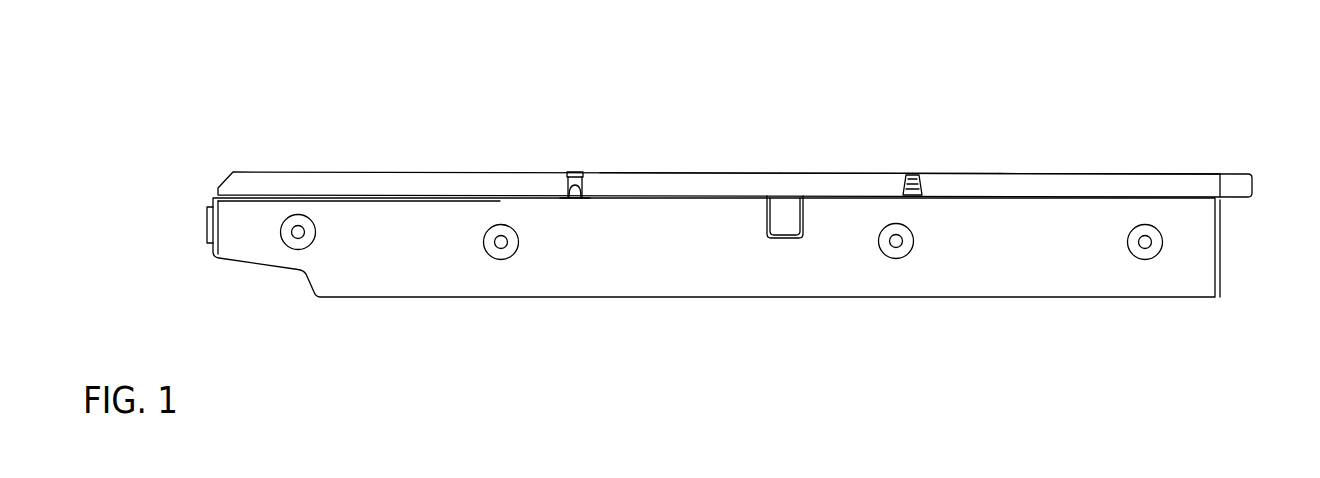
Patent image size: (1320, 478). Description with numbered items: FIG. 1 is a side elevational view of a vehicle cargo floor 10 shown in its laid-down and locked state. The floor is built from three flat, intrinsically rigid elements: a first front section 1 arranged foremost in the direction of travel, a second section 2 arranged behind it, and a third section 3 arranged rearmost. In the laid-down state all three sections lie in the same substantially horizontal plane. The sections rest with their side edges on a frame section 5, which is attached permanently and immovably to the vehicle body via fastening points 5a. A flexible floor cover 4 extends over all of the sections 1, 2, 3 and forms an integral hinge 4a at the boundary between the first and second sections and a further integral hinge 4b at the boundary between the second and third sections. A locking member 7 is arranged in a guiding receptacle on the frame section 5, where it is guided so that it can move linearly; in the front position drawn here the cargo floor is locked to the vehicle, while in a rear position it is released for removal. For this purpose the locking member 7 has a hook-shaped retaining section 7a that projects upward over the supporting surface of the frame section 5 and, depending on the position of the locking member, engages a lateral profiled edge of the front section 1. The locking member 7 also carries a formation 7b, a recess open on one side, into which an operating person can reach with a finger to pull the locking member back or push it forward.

The guide rail assembly 10 is at (214, 163).
The first front section 1 is at (391, 182).
The second section 2 is at (691, 182).
The third section 3 is at (1057, 184).
The flexible floor cover 4 is at (831, 126).
The integral hinge 4a is at (564, 146).
The integral hinge 4b is at (902, 146).
The frame section 5 is at (377, 262).
The fastening points 5a is at (294, 243).
The locking member 7 is at (681, 229).
The retaining section 7a is at (589, 224).
The formation 7b is at (782, 202).